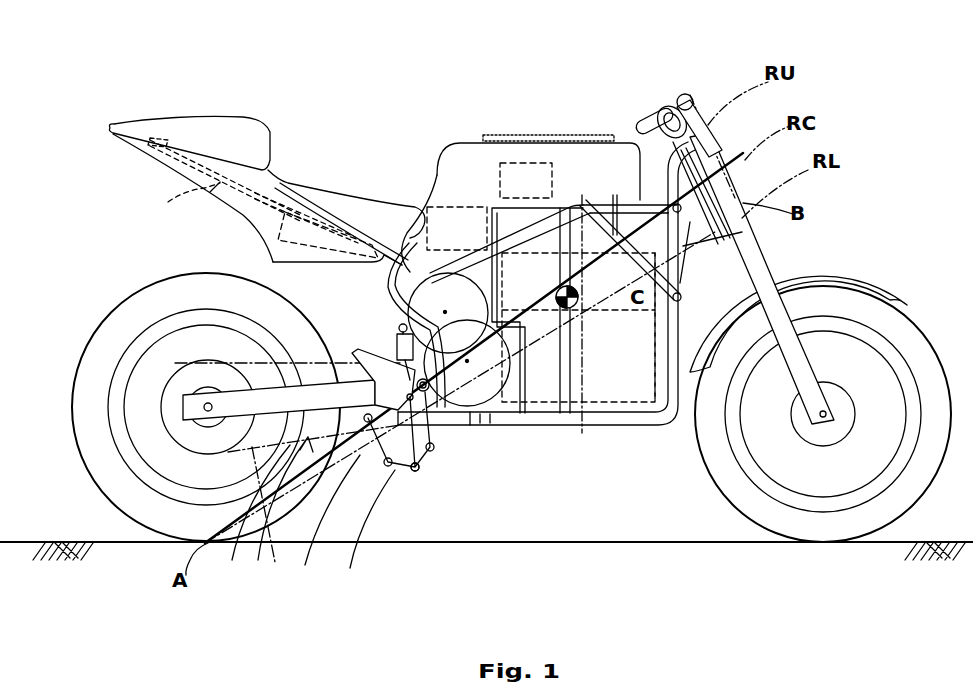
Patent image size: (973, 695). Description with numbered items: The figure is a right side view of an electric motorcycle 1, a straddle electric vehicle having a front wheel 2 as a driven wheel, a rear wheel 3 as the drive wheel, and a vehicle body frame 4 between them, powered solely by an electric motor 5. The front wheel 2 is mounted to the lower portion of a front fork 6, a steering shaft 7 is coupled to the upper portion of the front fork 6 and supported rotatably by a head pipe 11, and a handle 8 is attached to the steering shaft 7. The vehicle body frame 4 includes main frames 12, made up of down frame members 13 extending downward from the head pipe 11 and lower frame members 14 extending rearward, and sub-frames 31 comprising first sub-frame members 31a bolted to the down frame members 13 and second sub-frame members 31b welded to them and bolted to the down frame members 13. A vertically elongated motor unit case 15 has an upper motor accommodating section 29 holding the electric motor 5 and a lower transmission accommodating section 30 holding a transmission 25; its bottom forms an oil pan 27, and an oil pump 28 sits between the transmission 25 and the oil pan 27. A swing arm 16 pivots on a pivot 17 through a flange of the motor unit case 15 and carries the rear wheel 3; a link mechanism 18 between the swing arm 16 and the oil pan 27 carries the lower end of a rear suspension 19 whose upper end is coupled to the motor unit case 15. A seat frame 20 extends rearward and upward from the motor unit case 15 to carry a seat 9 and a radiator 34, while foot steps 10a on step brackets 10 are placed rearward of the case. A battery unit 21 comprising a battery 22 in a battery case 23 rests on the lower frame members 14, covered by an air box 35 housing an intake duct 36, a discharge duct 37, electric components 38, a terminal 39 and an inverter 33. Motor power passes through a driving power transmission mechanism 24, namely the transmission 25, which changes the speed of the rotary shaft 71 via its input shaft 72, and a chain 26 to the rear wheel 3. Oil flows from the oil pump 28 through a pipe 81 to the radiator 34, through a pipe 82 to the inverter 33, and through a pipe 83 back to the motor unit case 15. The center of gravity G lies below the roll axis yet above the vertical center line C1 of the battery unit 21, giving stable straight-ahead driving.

The electric motorcycle 1 is at (845, 94).
The front wheel 2 is at (777, 545).
The rear wheel 3 is at (248, 528).
The vehicle body frame 4 is at (752, 260).
The electric motor 5 is at (372, 310).
The front fork 6 is at (705, 275).
The steering shaft 7 is at (710, 190).
The handle 8 is at (688, 96).
The seat 9 is at (268, 122).
The step brackets 10 is at (380, 357).
The foot steps 10a is at (416, 471).
The head pipe 11 is at (712, 140).
The main frames 12 is at (668, 428).
The down frame members 13 is at (630, 428).
The lower frame members 14 is at (592, 428).
The motor unit case 15 is at (458, 147).
The swing arm 16 is at (312, 550).
The pivot 17 is at (370, 347).
The link mechanism 18 is at (396, 470).
The rear suspension 19 is at (372, 467).
The seat frame 20 is at (180, 207).
The battery unit 21 is at (598, 422).
The battery 22 is at (565, 428).
The battery case 23 is at (538, 428).
The driving power transmission mechanism 24 is at (310, 453).
The transmission 25 is at (470, 408).
The chain 26 is at (278, 557).
The oil pan 27 is at (428, 452).
The oil pump 28 is at (440, 440).
The motor accommodating section 29 is at (407, 317).
The transmission accommodating section 30 is at (516, 422).
The sub-frames 31 is at (547, 157).
The first sub-frame members 31a is at (620, 157).
The second sub-frame members 31b is at (607, 157).
The inverter 33 is at (453, 157).
The radiator 34 is at (282, 220).
The air box 35 is at (472, 157).
The intake duct 36 is at (587, 157).
The discharge duct 37 is at (437, 207).
The electric components 38 is at (523, 157).
The terminal 39 is at (510, 157).
The rotary shaft 71 is at (388, 243).
The input shaft 72 is at (482, 404).
The pipe 81 is at (323, 200).
The pipe 82 is at (345, 203).
The pipe 83 is at (420, 200).
The center of gravity G is at (580, 291).
The vertical center line C1 is at (683, 297).